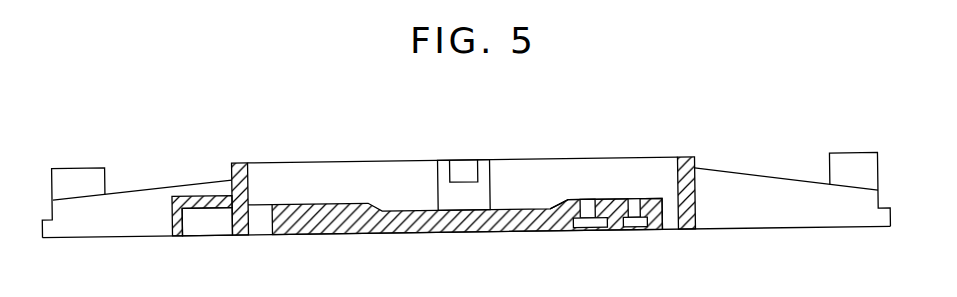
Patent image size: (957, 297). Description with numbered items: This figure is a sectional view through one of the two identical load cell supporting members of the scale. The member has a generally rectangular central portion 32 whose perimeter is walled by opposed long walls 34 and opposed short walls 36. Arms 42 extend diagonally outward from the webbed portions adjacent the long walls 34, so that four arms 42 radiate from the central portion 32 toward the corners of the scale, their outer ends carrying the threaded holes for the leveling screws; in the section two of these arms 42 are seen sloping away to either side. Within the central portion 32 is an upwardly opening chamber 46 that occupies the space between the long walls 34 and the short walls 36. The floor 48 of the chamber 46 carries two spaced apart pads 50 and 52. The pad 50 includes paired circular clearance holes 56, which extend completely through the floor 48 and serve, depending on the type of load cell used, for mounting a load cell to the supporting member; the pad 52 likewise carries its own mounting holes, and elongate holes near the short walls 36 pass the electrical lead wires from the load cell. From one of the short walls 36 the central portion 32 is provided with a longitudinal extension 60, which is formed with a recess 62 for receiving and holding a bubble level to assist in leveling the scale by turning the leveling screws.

The central portion 32 is at (595, 142).
The long walls 34 is at (558, 171).
The short walls 36 is at (238, 163).
The arms 42 is at (139, 182).
The chamber 46 is at (389, 180).
The floor 48 is at (505, 210).
The pad 50 is at (610, 201).
The pad 52 is at (305, 201).
The circular clearance holes 56 is at (638, 231).
The longitudinal extension 60 is at (192, 191).
The recess 62 is at (180, 216).